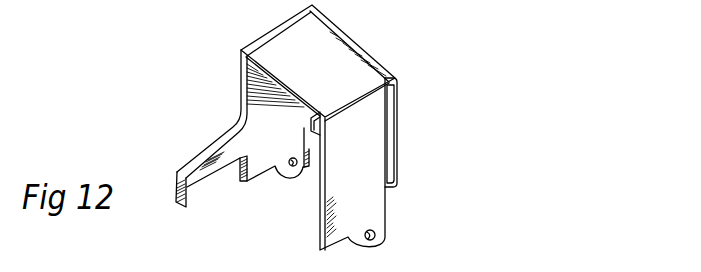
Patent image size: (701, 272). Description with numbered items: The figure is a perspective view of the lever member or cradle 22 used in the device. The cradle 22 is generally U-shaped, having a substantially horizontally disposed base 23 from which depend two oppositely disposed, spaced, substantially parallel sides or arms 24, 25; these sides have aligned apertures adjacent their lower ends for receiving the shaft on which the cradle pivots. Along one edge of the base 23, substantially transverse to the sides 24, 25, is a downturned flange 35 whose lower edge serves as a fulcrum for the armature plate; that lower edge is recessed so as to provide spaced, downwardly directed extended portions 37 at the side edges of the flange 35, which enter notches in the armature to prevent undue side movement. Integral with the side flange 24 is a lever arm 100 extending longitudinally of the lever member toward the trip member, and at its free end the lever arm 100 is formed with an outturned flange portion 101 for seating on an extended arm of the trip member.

The lever member or cradle 22 is at (302, 127).
The base 23 is at (330, 34).
The side or arm 24 is at (255, 107).
The side or arm 25 is at (378, 210).
The downturned flange 35 is at (394, 126).
The extended portions 37 is at (311, 122).
The lever arm 100 is at (206, 149).
The outturned flange portion 101 is at (176, 208).